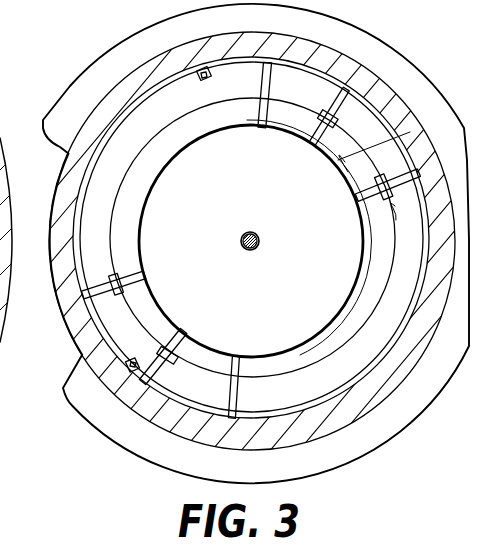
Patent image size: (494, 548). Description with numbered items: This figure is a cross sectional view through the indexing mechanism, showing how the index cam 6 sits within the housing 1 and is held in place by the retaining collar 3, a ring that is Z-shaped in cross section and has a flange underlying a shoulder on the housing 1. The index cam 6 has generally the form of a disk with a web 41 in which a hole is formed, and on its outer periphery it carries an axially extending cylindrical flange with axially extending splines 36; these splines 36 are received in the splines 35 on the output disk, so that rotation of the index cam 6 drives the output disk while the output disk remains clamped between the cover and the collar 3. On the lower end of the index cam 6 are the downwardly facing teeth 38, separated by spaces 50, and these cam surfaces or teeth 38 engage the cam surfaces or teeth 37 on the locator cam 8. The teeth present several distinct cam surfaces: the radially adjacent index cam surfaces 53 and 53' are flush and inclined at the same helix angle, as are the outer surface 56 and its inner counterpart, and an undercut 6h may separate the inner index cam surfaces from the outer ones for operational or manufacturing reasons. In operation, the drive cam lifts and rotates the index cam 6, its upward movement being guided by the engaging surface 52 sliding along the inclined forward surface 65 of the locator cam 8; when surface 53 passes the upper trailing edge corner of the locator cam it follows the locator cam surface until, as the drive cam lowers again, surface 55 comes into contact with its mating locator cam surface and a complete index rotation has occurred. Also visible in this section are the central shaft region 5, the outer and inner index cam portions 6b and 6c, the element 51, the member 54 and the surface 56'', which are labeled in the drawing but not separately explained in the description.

The housing 1 is at (391, 381).
The retaining collar 3 is at (429, 72).
The shaft 5 is at (243, 250).
The index cam 6 is at (367, 294).
The ring portion 6b is at (143, 120).
The ring portion 6c is at (143, 167).
The undercut 6h is at (327, 97).
The locator cam 8 is at (0, 150).
The splines 35 is at (211, 78).
The splines 36 is at (192, 72).
The cam surfaces or teeth 37 is at (8, 143).
The downwardly facing teeth 38 is at (123, 241).
The web 41 is at (252, 332).
The spaces 50 is at (192, 127).
The radial pin 51 is at (355, 120).
The engaging surface 52 is at (347, 104).
The index cam surface 53 is at (362, 107).
The index cam surface 53' is at (309, 142).
The spring element 54 is at (262, 77).
The end locating surface 55 is at (251, 134).
The index cam surface 56 is at (363, 47).
The pin end 56'' is at (268, 143).
The forward surface 65 is at (8, 119).